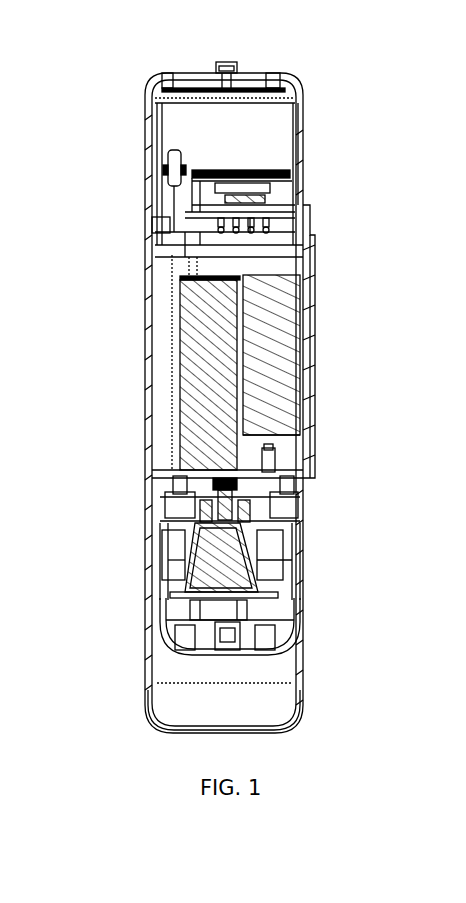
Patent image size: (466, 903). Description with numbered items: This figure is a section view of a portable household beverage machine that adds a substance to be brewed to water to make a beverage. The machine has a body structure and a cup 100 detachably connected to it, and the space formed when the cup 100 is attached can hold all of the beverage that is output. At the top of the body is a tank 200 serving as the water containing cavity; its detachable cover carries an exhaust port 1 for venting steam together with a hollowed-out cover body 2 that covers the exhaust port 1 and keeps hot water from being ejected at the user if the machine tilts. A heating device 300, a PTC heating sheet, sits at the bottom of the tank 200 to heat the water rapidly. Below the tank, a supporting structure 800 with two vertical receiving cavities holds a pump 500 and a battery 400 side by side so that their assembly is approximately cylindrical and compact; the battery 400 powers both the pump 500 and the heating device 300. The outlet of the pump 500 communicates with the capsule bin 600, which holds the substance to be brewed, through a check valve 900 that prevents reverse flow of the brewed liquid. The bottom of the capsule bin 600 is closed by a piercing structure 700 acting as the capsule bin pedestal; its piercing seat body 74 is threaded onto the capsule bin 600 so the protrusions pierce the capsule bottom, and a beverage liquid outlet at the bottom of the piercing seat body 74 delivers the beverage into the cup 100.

The exhaust port 1 is at (212, 73).
The cover body 2 is at (237, 67).
The cup 100 is at (303, 686).
The tank 200 is at (260, 128).
The heating device 300 is at (298, 186).
The battery 400 is at (205, 343).
The pump 500 is at (313, 351).
The capsule bin 600 is at (303, 551).
The piercing structure 700 is at (195, 607).
The piercing seat body 74 is at (302, 617).
The supporting structure 800 is at (240, 415).
The check valve 900 is at (305, 478).